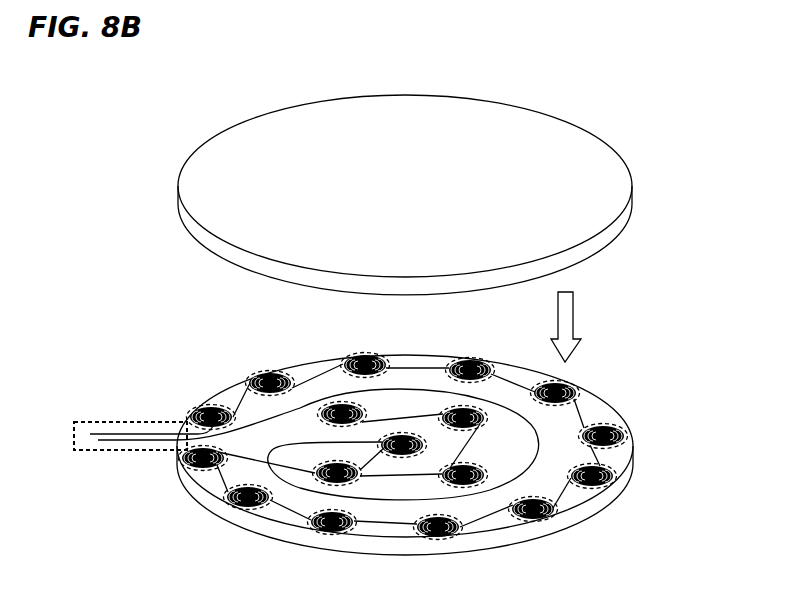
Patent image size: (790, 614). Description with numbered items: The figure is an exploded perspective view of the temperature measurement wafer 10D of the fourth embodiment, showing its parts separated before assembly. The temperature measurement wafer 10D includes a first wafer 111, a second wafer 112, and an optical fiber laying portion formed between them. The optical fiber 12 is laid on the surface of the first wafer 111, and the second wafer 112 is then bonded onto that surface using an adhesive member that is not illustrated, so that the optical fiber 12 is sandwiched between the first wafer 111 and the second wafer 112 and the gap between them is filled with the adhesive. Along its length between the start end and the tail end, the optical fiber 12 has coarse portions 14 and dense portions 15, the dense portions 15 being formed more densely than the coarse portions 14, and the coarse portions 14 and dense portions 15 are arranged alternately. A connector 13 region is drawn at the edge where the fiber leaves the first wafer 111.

The temperature measurement wafer 10D is at (172, 102).
The first wafer 111 is at (628, 465).
The second wafer 112 is at (630, 203).
The optical fiber 12 is at (626, 415).
The connector 13 is at (118, 421).
The coarse portions 14 is at (577, 401).
The dense portions 15 is at (630, 433).